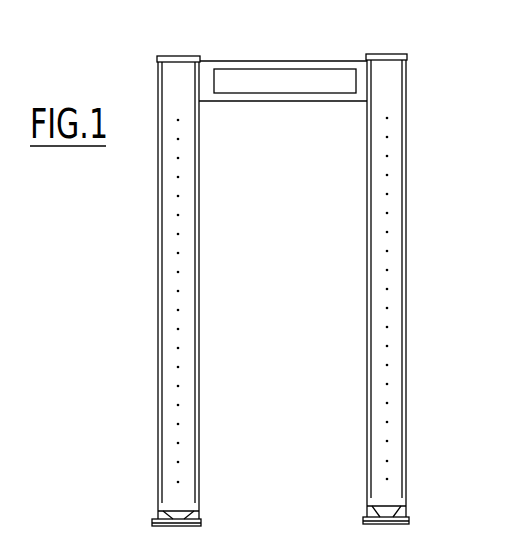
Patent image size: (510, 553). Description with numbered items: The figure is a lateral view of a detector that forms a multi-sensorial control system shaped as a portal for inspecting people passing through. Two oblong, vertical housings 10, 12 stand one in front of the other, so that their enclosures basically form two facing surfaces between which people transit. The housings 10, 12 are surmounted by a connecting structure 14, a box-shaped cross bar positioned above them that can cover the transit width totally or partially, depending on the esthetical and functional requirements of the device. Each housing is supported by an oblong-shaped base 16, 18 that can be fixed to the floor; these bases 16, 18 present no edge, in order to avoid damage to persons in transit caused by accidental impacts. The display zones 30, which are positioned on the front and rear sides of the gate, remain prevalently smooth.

The housing 10 is at (149, 359).
The housing 12 is at (356, 389).
The connecting structure 14 is at (357, 60).
The base 16 is at (142, 519).
The base 18 is at (379, 522).
The display zones 30 is at (383, 190).